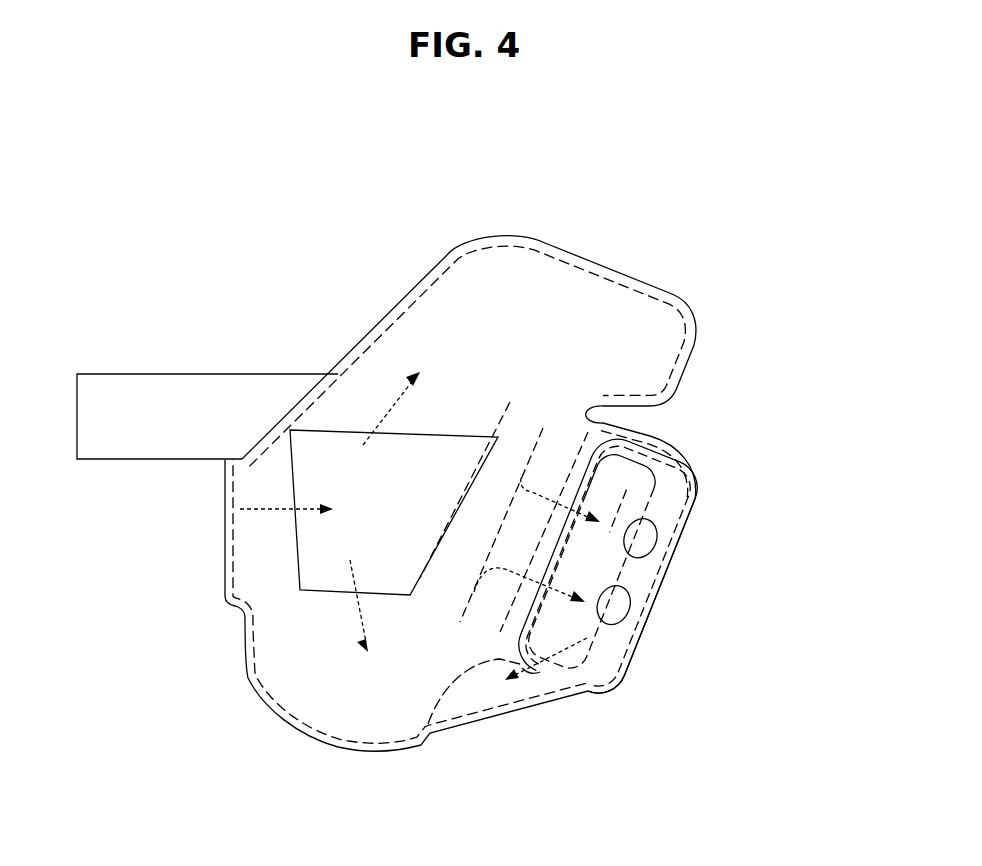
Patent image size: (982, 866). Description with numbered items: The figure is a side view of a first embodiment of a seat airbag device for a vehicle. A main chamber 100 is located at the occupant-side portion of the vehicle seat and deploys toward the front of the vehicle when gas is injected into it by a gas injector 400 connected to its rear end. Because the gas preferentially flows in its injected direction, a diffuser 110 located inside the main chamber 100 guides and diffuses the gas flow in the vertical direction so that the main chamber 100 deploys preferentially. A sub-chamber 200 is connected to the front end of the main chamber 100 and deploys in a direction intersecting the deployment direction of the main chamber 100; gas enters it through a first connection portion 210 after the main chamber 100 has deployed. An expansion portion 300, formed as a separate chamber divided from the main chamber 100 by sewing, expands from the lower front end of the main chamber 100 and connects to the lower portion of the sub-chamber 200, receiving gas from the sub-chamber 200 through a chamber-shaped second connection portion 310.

The main chamber 100 is at (510, 266).
The diffuser 110 is at (327, 555).
The sub-chamber 200 is at (682, 566).
The first connection portion 210 is at (640, 540).
The expansion portion 300 is at (485, 692).
The second connection portion 310 is at (530, 673).
The gas injector 400 is at (176, 393).